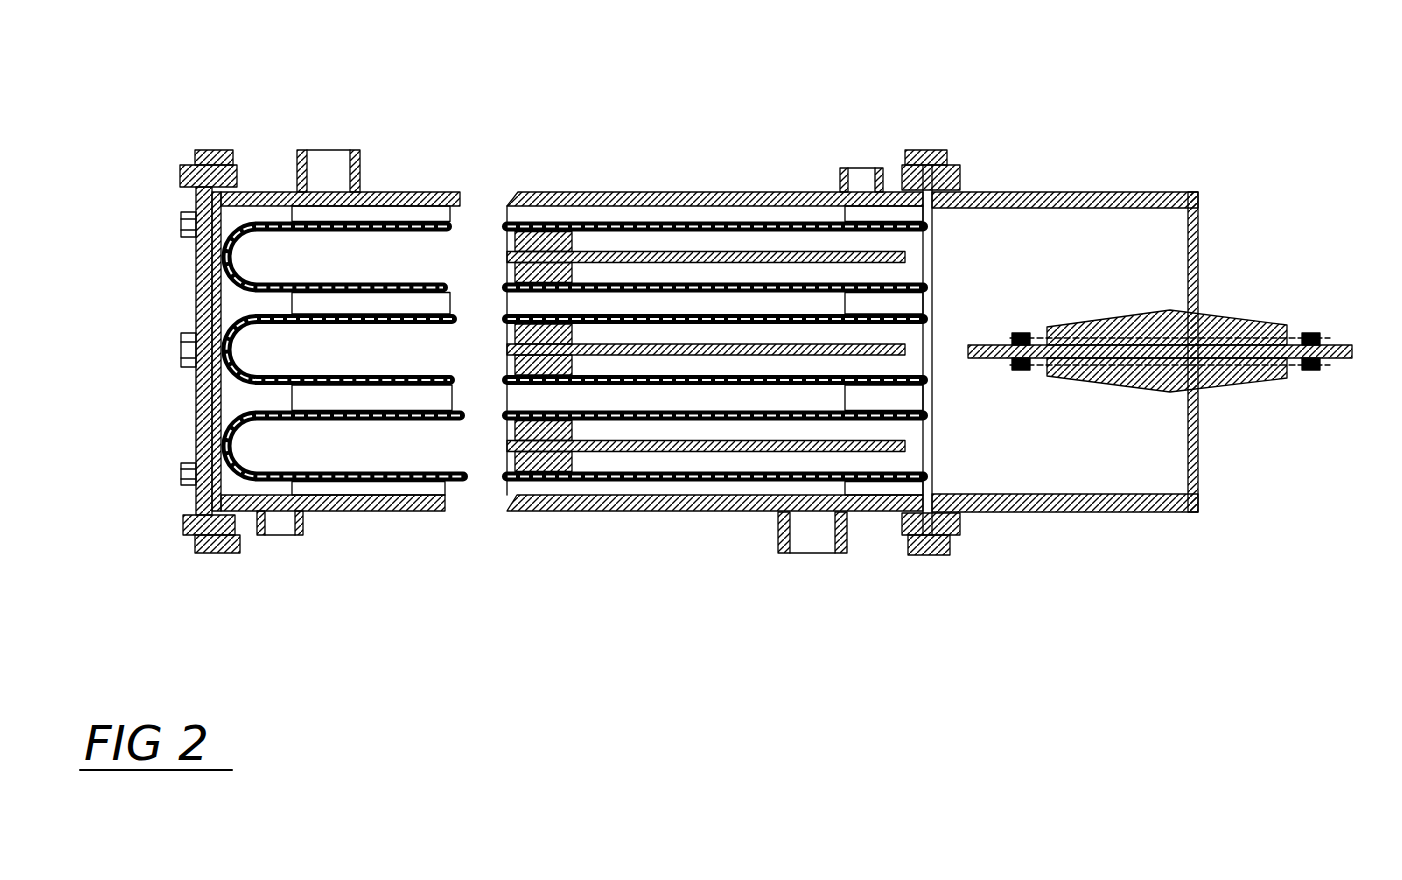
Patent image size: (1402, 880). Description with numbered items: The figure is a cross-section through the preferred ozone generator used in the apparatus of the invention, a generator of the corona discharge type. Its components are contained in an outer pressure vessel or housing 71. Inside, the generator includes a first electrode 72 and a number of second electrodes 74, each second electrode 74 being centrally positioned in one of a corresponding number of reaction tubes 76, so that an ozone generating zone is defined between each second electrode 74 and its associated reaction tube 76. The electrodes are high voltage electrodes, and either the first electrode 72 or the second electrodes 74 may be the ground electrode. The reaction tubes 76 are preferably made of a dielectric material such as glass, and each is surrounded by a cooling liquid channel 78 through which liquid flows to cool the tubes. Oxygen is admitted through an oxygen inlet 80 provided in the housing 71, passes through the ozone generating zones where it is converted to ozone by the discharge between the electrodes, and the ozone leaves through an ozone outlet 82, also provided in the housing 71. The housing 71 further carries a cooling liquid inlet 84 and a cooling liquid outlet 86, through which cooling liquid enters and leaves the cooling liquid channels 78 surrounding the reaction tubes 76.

The outer pressure vessel or housing 71 is at (1122, 511).
The first electrode 72 is at (1388, 305).
The second electrode 74 is at (793, 340).
The reaction tube 76 is at (197, 400).
The cooling liquid channel 78 is at (624, 305).
The oxygen inlet 80 is at (862, 165).
The ozone outlet 82 is at (278, 548).
The cooling liquid inlet 84 is at (815, 557).
The cooling liquid outlet 86 is at (332, 142).